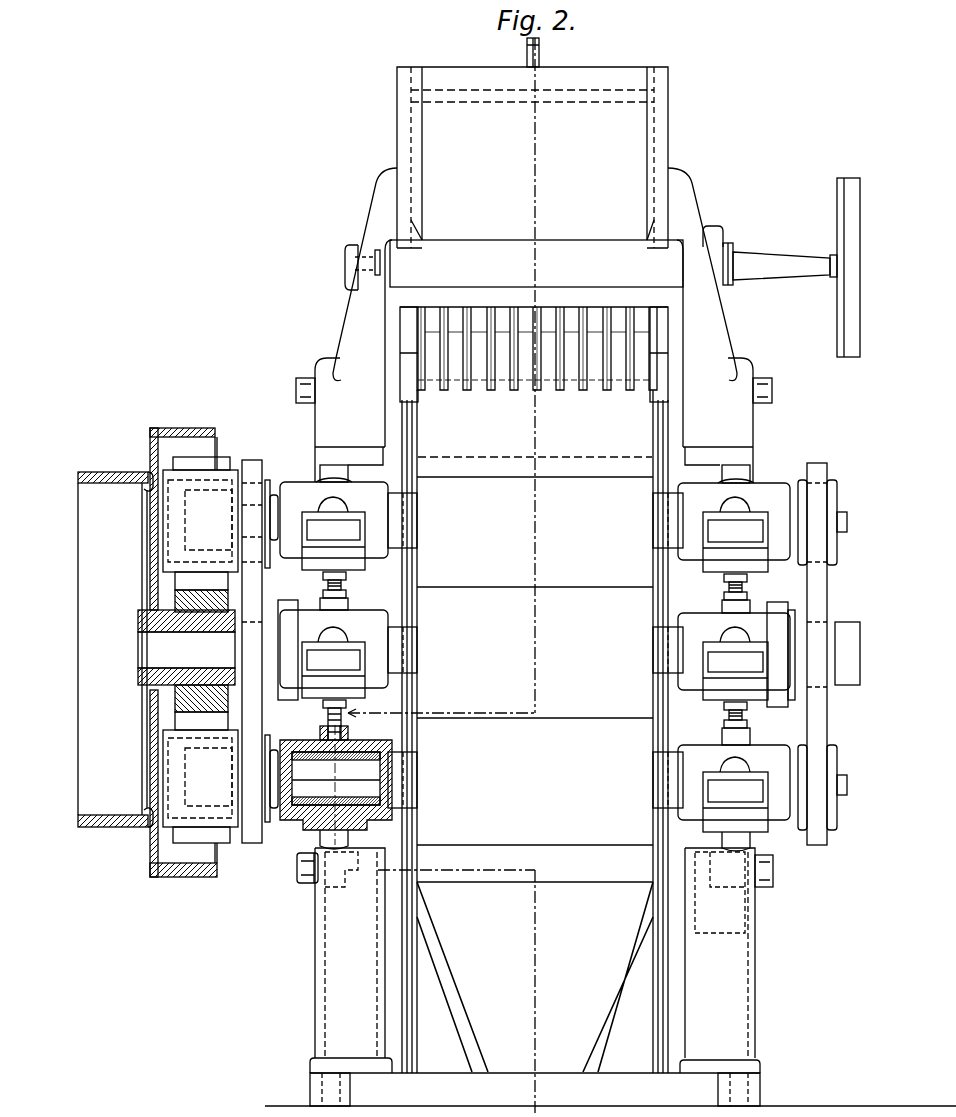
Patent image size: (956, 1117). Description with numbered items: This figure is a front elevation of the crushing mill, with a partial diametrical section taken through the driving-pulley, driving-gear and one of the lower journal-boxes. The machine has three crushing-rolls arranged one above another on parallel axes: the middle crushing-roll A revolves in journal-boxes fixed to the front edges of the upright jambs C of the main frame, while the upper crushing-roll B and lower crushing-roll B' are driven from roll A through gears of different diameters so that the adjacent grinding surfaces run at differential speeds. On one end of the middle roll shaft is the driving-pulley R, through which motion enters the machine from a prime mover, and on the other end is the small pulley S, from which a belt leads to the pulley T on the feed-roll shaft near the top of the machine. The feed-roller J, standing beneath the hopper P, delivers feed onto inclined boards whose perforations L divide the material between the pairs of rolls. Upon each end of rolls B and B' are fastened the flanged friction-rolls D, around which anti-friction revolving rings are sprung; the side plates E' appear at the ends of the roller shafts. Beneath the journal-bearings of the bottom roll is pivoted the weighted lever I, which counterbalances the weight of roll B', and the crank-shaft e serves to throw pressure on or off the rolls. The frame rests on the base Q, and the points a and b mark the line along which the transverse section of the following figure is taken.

The hopper P is at (532, 375).
The feed-roller J is at (536, 263).
The perforations L is at (621, 301).
The upright jambs C is at (534, 637).
The pulley on feed-roll shaft T is at (788, 267).
The side plates E' is at (546, 653).
The friction-rolls D is at (270, 482).
The driving-pulley R is at (115, 641).
The small pulley S is at (854, 653).
The upper crushing-roll B is at (535, 506).
The middle crushing-roll A is at (535, 652).
The section line point b is at (448, 713).
The lower crushing-roll B' is at (535, 807).
The crank-shaft e is at (463, 988).
The base frame Q is at (535, 977).
The weighted lever I is at (535, 892).
The section line point a is at (340, 860).